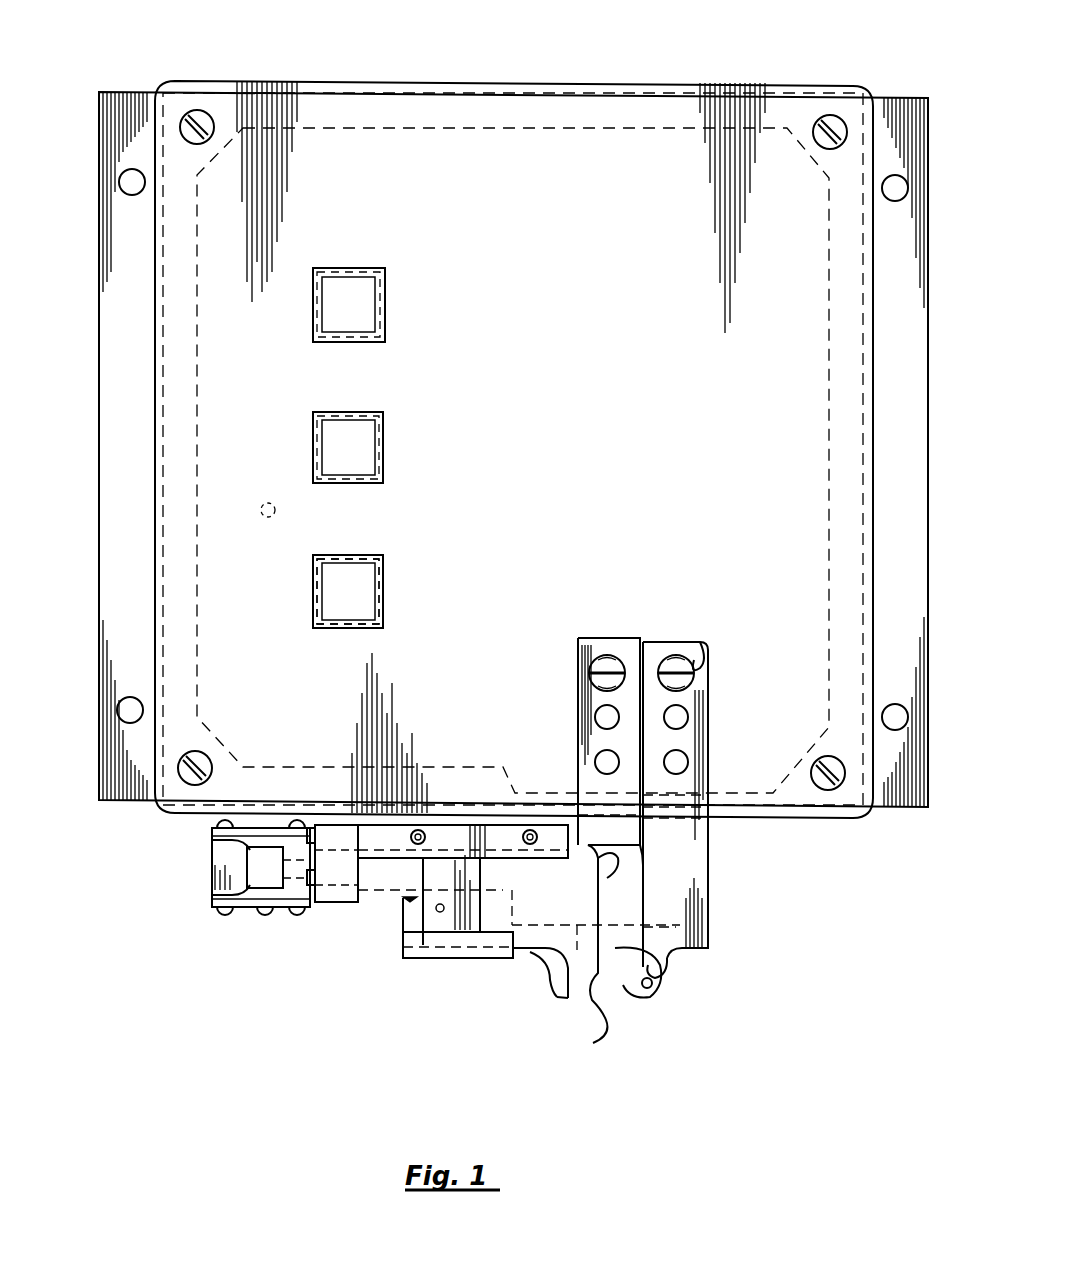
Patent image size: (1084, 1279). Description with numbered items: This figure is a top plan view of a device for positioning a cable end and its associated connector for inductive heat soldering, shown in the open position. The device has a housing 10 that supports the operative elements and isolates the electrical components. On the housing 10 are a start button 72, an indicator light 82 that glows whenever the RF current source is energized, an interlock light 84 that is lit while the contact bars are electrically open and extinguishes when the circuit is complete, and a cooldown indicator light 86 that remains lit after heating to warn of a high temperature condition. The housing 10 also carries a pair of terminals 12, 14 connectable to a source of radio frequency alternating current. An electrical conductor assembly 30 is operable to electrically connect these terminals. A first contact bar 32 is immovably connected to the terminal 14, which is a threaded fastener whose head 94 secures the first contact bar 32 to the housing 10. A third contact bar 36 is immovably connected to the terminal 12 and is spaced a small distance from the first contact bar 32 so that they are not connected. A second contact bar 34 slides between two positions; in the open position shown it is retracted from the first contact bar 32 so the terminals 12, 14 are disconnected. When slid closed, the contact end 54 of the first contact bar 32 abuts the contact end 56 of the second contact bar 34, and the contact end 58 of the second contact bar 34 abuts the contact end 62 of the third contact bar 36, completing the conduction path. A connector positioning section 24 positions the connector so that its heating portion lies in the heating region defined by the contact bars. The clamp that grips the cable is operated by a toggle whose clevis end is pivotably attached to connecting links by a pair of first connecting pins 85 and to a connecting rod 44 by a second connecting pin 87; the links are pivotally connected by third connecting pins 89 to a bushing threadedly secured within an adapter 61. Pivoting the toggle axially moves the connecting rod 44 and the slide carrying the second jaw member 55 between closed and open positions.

The housing 10 is at (353, 152).
The terminal 12 is at (607, 660).
The terminal 14 is at (676, 660).
The connector positioning section 24 is at (662, 965).
The electrical conductor assembly 30 is at (735, 912).
The first electrically conductive contact bar 32 is at (708, 850).
The second electrically conductive contact bar 34 is at (567, 957).
The third electrically conductive contact bar 36 is at (580, 712).
The connecting rod 44 is at (258, 860).
The contact end 54 is at (622, 1003).
The second jaw member 55 is at (557, 992).
The contact end 56 is at (596, 974).
The contact end 58 is at (598, 881).
The adapter 61 is at (332, 903).
The contact end 62 is at (633, 852).
The start button 72 is at (323, 595).
The indicator light 82 is at (353, 578).
The interlock light 84 is at (355, 433).
The first connecting pins 85 is at (223, 910).
The cooldown indicator light 86 is at (353, 292).
The second connecting pin 87 is at (267, 908).
The third connecting pins 89 is at (298, 910).
The head 94 is at (703, 655).